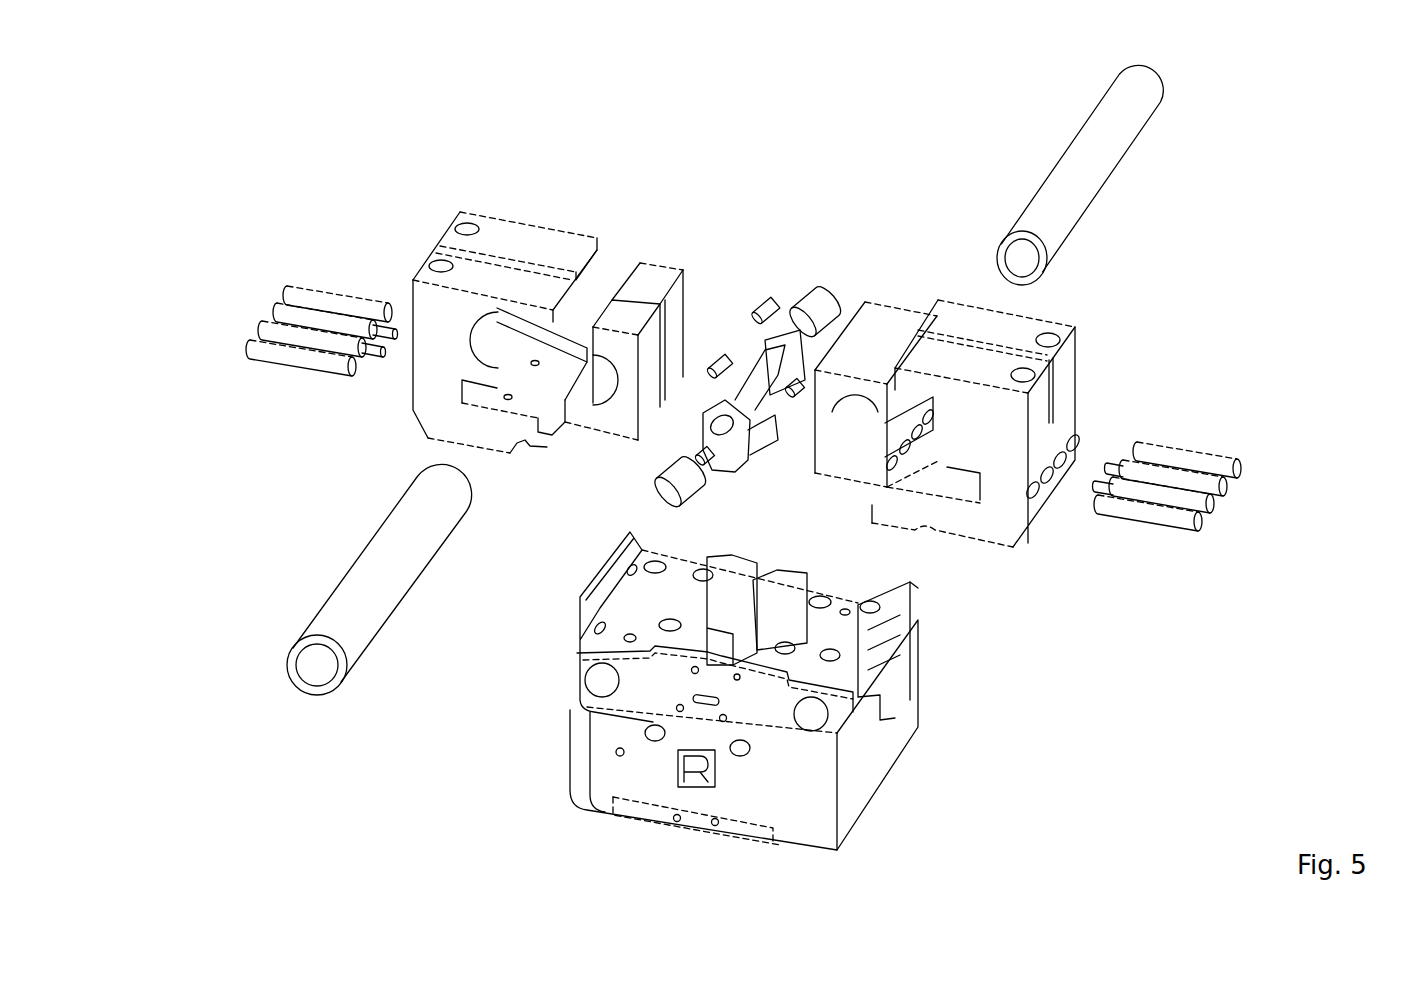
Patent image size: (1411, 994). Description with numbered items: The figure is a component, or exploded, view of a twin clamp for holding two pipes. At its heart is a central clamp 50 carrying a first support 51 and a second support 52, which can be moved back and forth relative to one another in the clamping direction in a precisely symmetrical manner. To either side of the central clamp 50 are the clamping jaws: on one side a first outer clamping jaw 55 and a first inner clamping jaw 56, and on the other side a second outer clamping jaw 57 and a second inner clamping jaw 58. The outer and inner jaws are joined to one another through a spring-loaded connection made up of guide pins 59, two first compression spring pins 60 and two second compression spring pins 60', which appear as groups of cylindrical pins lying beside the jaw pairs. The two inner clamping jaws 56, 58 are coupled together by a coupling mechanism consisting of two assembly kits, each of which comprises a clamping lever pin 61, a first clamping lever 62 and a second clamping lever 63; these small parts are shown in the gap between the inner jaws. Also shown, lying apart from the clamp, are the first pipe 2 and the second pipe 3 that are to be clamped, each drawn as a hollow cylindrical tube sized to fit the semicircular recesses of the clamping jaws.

The first pipe 2 is at (345, 600).
The second pipe 3 is at (1078, 187).
The central clamp 50 is at (605, 772).
The first support 51 is at (645, 600).
The second support 52 is at (843, 617).
The first outer clamping jaw 55 is at (430, 305).
The first inner clamping jaw 56 is at (625, 310).
The second outer clamping jaw 57 is at (1067, 377).
The second inner clamping jaw 58 is at (880, 323).
The guide pins 59 is at (320, 297).
The first compression spring pins 60 is at (251, 295).
The second compression spring pins 60' is at (1217, 511).
The clamping lever pin 61 is at (673, 470).
The first clamping lever 62 is at (712, 370).
The second clamping lever 63 is at (730, 400).